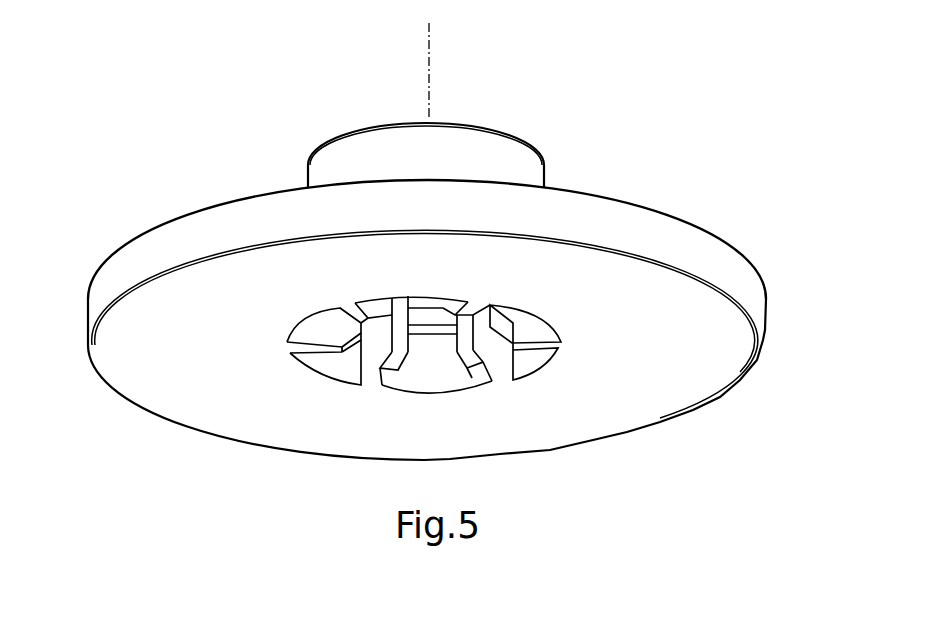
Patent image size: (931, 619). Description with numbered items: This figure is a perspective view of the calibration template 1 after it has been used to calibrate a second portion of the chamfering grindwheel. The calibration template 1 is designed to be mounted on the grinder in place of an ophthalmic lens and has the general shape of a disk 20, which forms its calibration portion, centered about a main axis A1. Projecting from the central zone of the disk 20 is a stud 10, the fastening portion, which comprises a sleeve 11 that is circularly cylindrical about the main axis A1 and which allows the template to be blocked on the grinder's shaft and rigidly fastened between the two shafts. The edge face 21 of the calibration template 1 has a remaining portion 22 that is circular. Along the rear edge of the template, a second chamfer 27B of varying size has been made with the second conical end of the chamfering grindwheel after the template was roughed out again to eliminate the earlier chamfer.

The calibration template 1 is at (653, 168).
The main axis A1 is at (430, 40).
The stud 10 is at (515, 136).
The sleeve 11 is at (358, 152).
The disk 20 is at (721, 230).
The edge face 21 is at (118, 272).
The remaining portion 22 is at (238, 223).
The second chamfer 27B is at (758, 340).